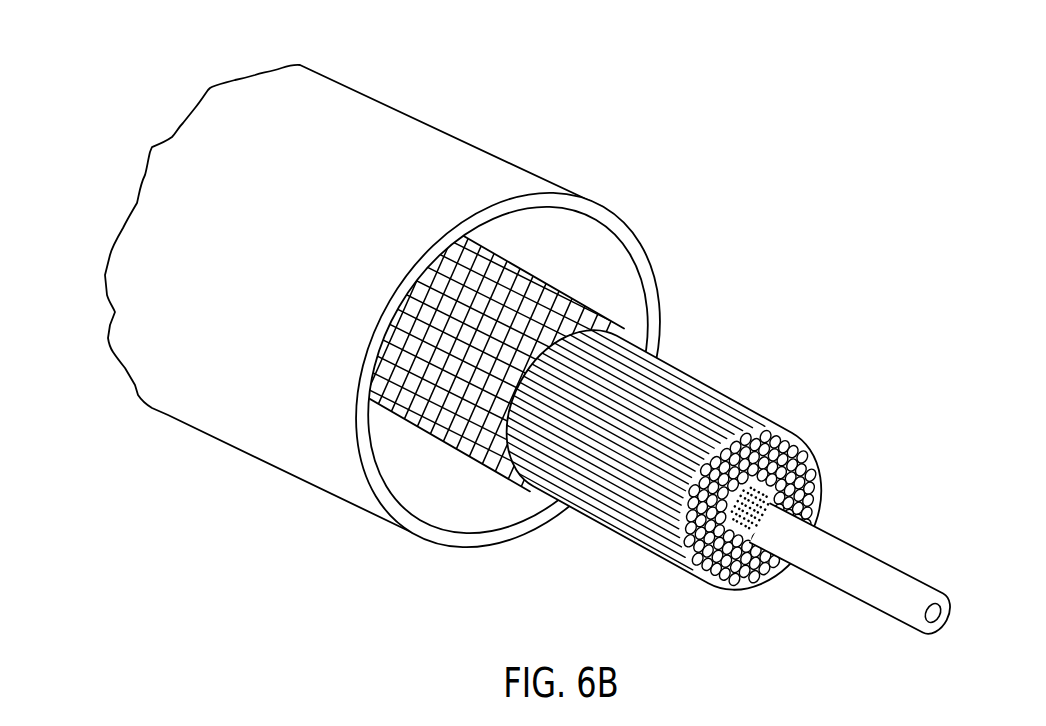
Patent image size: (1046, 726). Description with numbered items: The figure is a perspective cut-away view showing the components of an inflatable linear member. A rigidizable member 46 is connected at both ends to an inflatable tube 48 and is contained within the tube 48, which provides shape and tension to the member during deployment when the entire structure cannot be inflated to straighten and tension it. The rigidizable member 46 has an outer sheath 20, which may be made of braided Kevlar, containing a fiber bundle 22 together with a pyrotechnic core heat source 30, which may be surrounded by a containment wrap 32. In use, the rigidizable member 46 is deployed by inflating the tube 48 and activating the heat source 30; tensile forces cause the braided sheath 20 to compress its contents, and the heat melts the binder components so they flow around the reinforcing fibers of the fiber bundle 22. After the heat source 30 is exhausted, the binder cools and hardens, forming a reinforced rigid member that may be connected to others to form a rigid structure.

The rigidizable member 46 is at (531, 352).
The inflatable tube 48 is at (523, 169).
The outer sheath 20 is at (620, 325).
The fiber bundle 22 is at (618, 525).
The containment wrap 32 is at (813, 480).
The pyrotechnic core heat source 30 is at (903, 567).